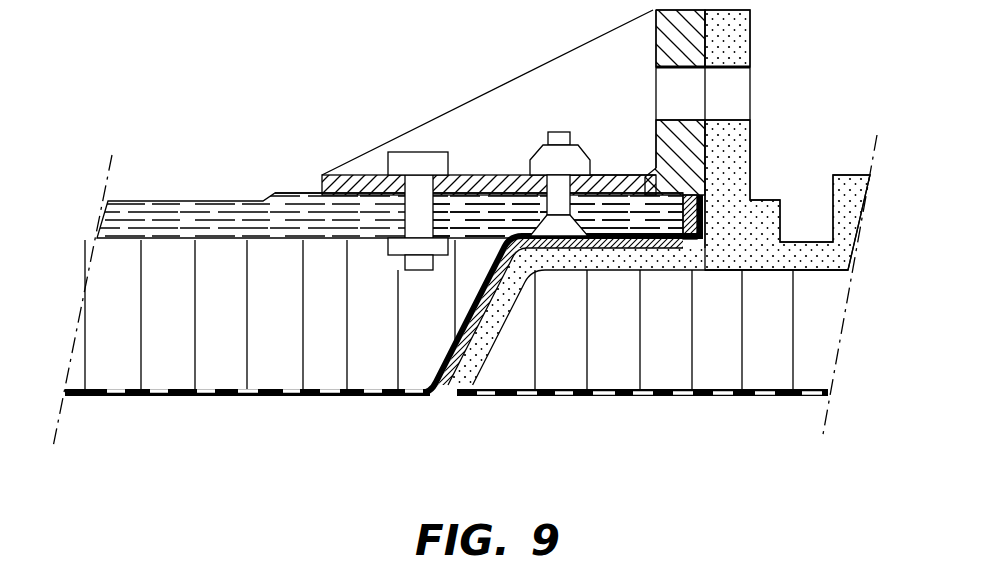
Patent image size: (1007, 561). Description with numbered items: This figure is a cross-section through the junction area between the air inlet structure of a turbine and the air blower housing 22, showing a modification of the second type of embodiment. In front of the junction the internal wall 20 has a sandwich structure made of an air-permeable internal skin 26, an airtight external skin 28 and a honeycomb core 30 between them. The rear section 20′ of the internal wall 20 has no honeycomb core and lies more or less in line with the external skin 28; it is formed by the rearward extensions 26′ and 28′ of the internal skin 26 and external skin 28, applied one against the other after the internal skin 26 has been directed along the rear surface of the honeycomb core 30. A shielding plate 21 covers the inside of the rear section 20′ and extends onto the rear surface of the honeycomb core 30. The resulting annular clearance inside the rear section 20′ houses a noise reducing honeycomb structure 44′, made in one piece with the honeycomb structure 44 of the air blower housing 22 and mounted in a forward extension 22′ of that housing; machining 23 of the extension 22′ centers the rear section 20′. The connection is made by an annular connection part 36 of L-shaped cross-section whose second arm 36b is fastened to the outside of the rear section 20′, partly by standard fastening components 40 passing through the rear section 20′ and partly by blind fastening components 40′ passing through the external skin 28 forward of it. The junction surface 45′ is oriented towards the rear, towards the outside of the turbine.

The internal wall 20 is at (122, 190).
The rear section 20′ is at (505, 183).
The shielding plate 21 is at (522, 249).
The air blower housing 22 is at (848, 168).
The forward extension of air blower housing 22′ is at (605, 252).
The machining 23 is at (660, 215).
The internal skin 26 is at (130, 395).
The rearward extension of internal skin 26′ is at (600, 175).
The external skin 28 is at (185, 225).
The rearward extension of external skin 28′ is at (512, 212).
The honeycomb core 30 is at (268, 345).
The annular connection part 36 is at (606, 24).
The second arm 36b is at (322, 185).
The fastening components 40 is at (550, 170).
The blind fastening components 40′ is at (385, 160).
The honeycomb structure 44 is at (798, 406).
The noise reducing honeycomb structure 44′ is at (614, 402).
The junction surface 45′ is at (450, 380).